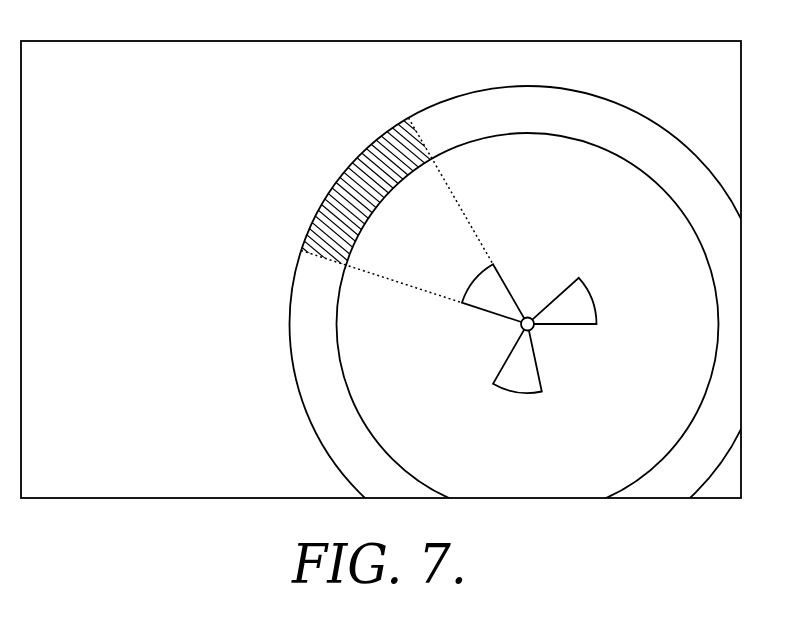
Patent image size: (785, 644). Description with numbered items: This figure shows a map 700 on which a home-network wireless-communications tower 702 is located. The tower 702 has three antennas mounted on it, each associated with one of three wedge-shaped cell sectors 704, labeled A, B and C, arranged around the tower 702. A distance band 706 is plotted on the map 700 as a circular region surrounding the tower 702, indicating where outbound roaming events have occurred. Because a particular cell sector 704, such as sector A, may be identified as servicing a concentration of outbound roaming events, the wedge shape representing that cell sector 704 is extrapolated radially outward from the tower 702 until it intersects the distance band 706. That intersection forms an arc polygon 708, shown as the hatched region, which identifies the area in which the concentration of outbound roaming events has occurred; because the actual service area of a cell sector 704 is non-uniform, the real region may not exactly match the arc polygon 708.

The map 700 is at (618, 45).
The home-network wireless-communications tower 702 is at (531, 318).
The cell sector 704 is at (487, 315).
The distance band 706 is at (597, 102).
The arc polygon 708 is at (355, 167).